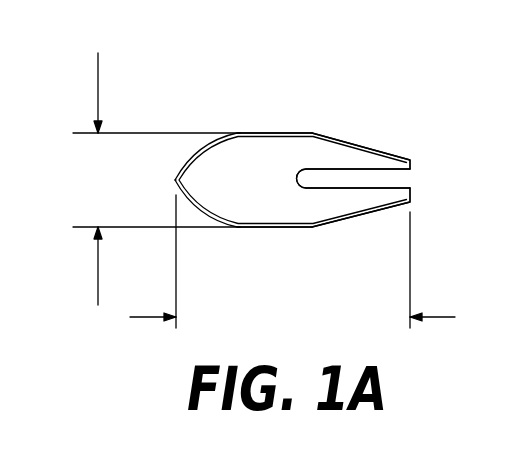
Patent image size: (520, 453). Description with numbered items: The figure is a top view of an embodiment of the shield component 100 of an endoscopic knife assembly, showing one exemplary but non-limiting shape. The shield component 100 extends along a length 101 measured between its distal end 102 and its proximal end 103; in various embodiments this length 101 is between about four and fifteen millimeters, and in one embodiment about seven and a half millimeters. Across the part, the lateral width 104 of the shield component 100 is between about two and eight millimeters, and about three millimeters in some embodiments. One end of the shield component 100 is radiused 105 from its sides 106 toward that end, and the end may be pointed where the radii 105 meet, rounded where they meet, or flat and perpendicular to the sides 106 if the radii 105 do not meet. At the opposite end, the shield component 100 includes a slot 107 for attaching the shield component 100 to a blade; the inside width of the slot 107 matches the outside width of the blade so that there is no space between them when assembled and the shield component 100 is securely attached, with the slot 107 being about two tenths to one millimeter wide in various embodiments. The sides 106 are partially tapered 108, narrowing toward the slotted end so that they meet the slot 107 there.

The shield component 100 is at (238, 185).
The length 101 is at (292, 267).
The distal end 102 is at (405, 157).
The proximal end 103 is at (166, 178).
The lateral width 104 is at (100, 290).
The radius 105 is at (238, 133).
The sides 106 is at (275, 228).
The slot 107 is at (368, 182).
The taper 108 is at (357, 217).